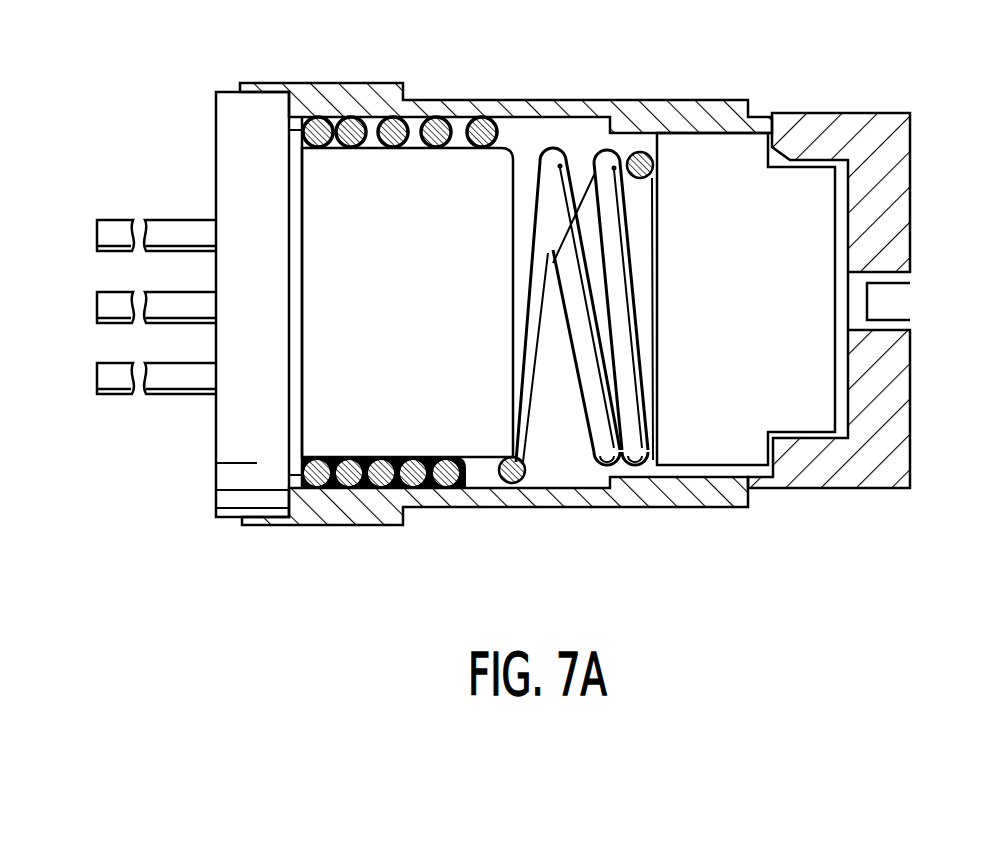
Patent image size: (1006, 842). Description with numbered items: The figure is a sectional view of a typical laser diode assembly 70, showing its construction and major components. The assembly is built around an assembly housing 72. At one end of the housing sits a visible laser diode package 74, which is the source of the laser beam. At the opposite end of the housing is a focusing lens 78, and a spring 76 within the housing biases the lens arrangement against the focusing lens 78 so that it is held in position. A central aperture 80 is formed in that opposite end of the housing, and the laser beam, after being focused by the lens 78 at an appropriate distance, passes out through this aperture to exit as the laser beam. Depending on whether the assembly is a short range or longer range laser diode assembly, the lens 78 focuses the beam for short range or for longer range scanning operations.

The laser diode assembly 70 is at (145, 160).
The assembly housing 72 is at (910, 178).
The visible laser diode package 74 is at (413, 250).
The spring 76 is at (556, 147).
The focusing lens 78 is at (752, 244).
The central aperture 80 is at (912, 290).